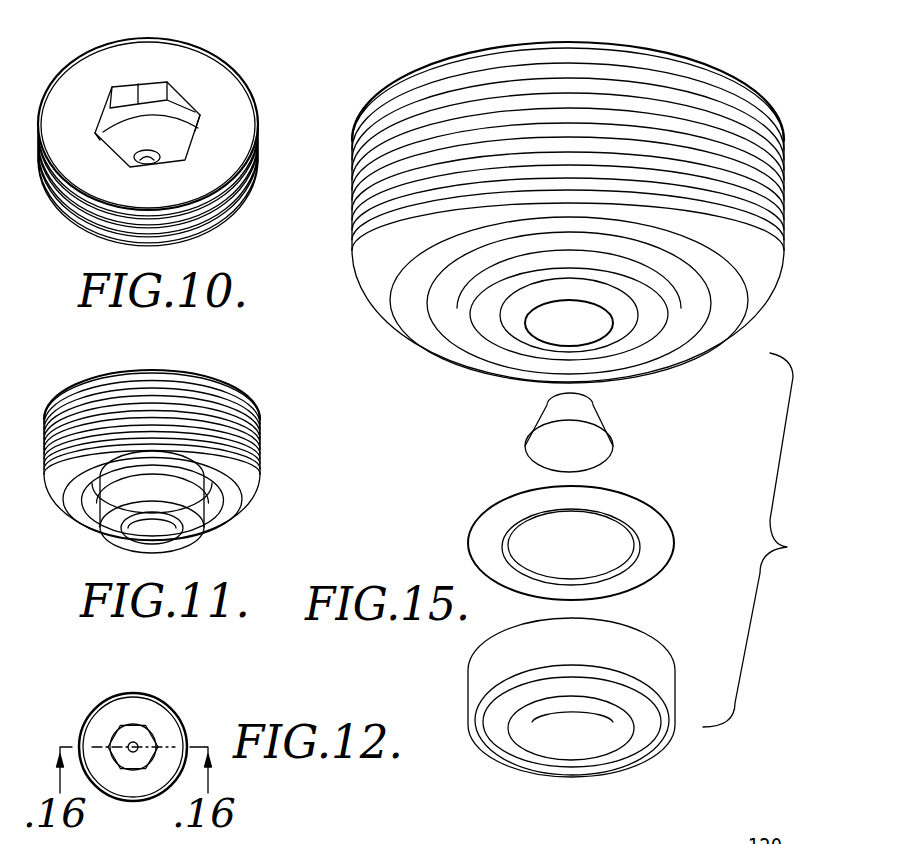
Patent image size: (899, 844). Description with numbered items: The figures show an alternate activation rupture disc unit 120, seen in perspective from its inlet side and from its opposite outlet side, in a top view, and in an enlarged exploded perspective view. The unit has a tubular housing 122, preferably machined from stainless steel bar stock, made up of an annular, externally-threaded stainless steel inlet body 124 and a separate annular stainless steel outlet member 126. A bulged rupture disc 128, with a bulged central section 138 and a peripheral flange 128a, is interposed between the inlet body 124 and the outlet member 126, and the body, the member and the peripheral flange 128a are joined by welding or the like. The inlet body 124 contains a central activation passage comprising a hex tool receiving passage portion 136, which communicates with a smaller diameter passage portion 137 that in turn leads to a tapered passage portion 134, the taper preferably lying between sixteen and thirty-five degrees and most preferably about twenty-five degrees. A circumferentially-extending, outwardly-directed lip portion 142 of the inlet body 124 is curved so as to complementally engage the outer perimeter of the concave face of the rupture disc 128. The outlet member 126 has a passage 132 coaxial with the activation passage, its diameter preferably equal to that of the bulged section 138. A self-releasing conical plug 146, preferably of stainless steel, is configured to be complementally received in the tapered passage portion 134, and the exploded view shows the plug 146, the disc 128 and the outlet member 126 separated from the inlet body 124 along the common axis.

In FIG. 10, the activation rupture disc unit 120 is at (252, 48).
In FIG. 11, the activation rupture disc unit 120 is at (243, 358).
In FIG. 12, the activation rupture disc unit 120 is at (201, 697).
In FIG. 15, the activation rupture disc unit 120 is at (742, 52).
In FIG. 10, the housing 122 is at (262, 185).
In FIG. 11, the housing 122 is at (195, 456).
In FIG. 12, the housing 122 is at (95, 698).
In FIG. 15, the housing 122 is at (342, 268).
In FIG. 10, the inlet body 124 is at (120, 52).
In FIG. 11, the inlet body 124 is at (151, 385).
In FIG. 12, the inlet body 124 is at (173, 732).
In FIG. 15, the inlet body 124 is at (557, 50).
In FIG. 11, the outlet member 126 is at (115, 537).
In FIG. 15, the outlet member 126 is at (477, 685).
In FIG. 11, the rupture disc 128 is at (205, 511).
In FIG. 15, the rupture disc 128 is at (488, 510).
In FIG. 15, the peripheral flange 128a is at (648, 520).
In FIG. 11, the passage 132 is at (172, 533).
In FIG. 15, the passage 132 is at (618, 728).
In FIG. 15, the tapered passage portion 134 is at (540, 317).
In FIG. 10, the passage portion 136 is at (187, 100).
In FIG. 12, the passage portion 136 is at (132, 722).
In FIG. 10, the passage portion 137 is at (130, 150).
In FIG. 12, the passage portion 137 is at (133, 747).
In FIG. 15, the bulged central section 138 is at (597, 565).
In FIG. 15, the lip portion 142 is at (618, 312).
In FIG. 12, the self-releasing conical plug 146 is at (140, 753).
In FIG. 15, the self-releasing conical plug 146 is at (543, 423).